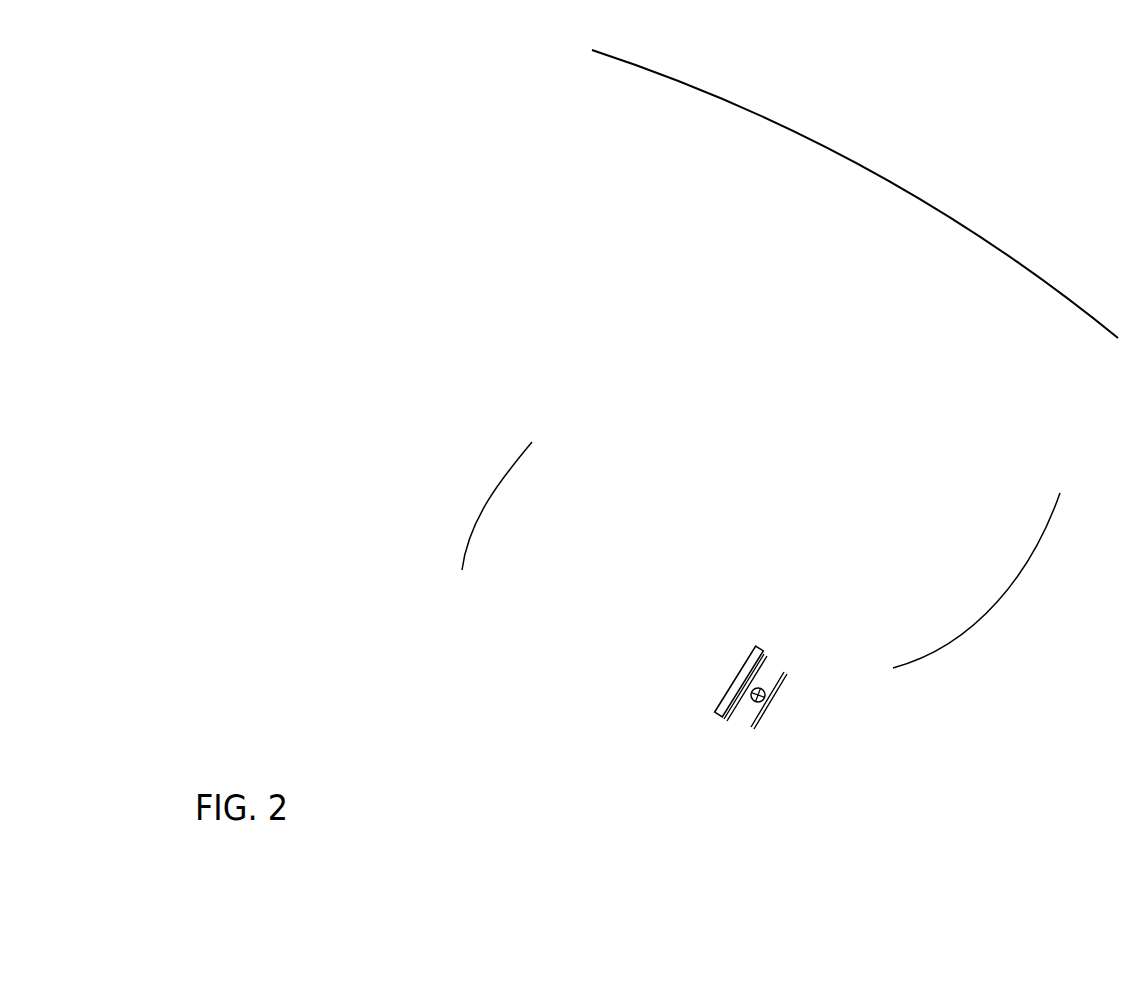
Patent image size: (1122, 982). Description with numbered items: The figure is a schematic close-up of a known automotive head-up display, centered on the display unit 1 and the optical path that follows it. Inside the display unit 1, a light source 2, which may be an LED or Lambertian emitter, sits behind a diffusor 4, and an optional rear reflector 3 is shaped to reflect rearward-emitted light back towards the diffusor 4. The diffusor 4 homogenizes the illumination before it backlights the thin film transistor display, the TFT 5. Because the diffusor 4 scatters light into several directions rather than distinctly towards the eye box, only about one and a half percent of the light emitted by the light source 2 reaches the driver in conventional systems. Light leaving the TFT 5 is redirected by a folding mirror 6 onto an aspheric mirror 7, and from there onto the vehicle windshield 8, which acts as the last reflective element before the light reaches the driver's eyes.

The display unit 1 is at (878, 763).
The light source 2 is at (757, 702).
The reflector 3 is at (757, 722).
The diffusor 4 is at (724, 720).
The TFT 5 is at (715, 713).
The folding mirror 6 is at (462, 572).
The aspheric mirror 7 is at (973, 628).
The windshield 8 is at (1093, 320).